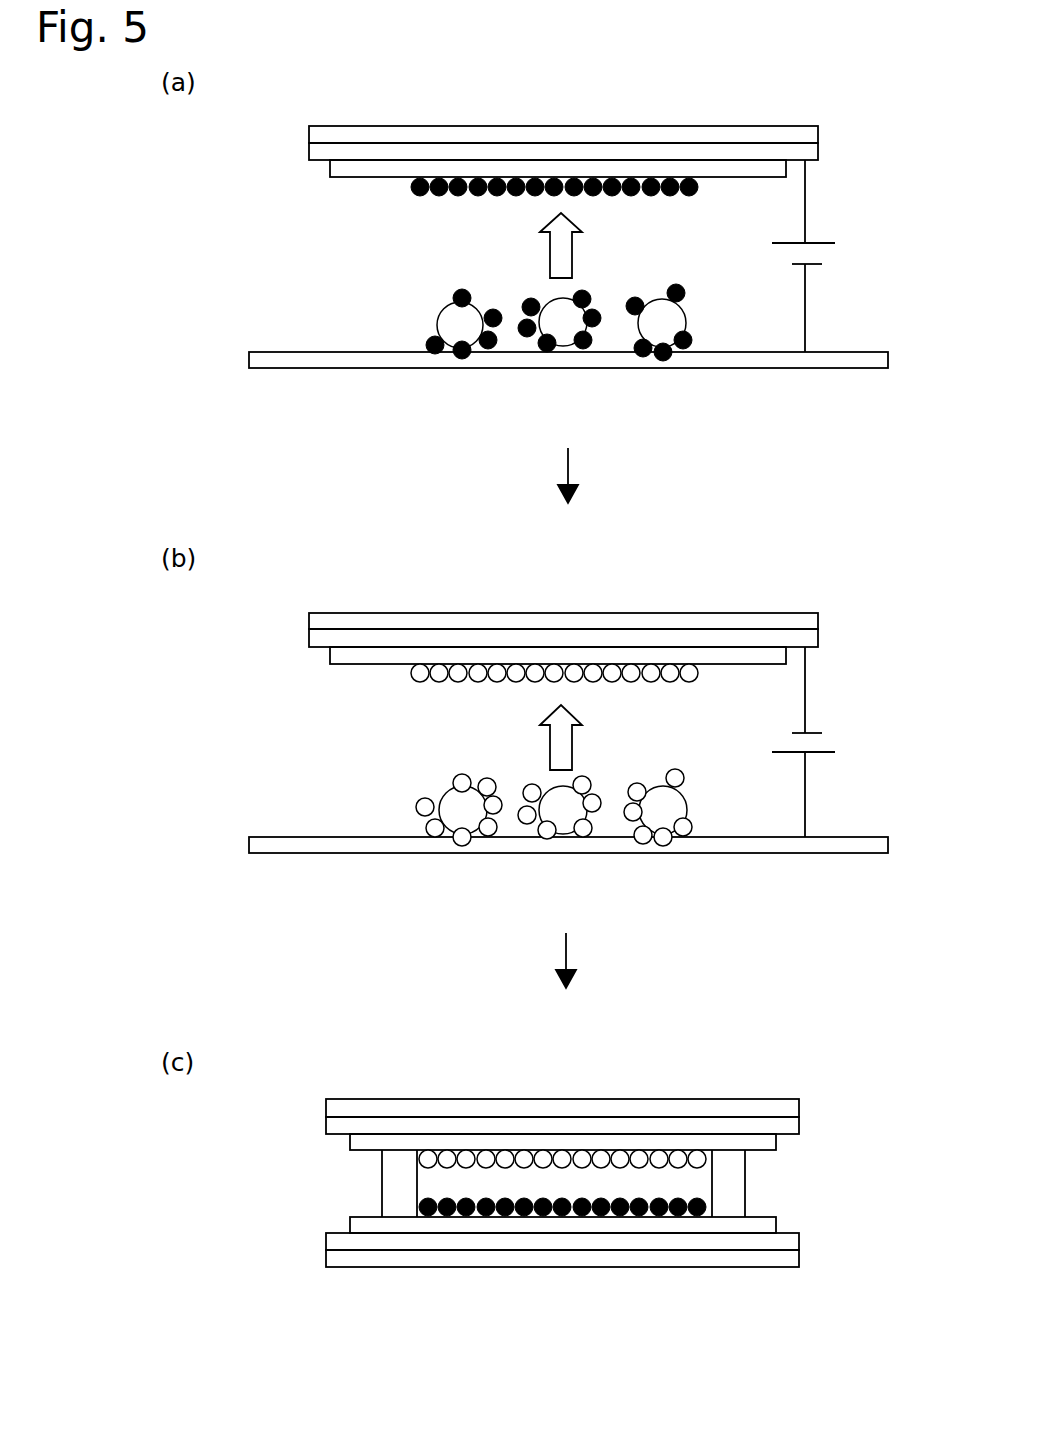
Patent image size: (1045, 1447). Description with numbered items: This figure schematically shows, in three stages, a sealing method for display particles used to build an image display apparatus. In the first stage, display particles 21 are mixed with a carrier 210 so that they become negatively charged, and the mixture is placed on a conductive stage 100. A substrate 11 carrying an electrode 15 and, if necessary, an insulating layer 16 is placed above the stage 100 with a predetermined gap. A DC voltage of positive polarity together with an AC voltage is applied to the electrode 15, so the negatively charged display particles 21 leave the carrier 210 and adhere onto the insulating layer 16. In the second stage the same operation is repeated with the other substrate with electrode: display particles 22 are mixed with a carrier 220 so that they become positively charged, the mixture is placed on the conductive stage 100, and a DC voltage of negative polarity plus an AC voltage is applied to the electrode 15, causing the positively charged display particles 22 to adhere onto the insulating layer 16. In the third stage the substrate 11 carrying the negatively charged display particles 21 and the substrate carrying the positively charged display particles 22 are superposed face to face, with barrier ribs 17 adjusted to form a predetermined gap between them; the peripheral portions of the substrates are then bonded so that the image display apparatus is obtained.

The substrate 11 is at (317, 133).
The electrode 15 is at (317, 153).
The insulating layer 16 is at (337, 170).
The barrier ribs 17 is at (728, 1203).
The display particles 21 is at (413, 185).
The display particles 22 is at (412, 672).
The carrier 210 is at (448, 318).
The carrier 220 is at (453, 798).
The conductive stage 100 is at (752, 358).